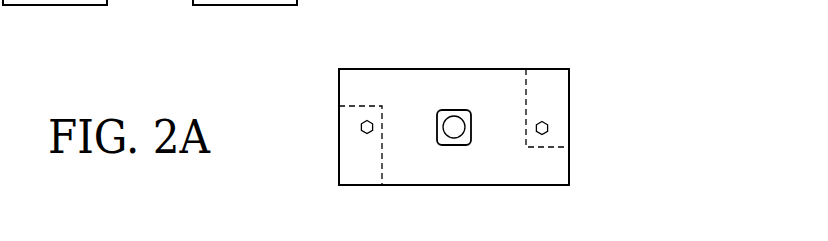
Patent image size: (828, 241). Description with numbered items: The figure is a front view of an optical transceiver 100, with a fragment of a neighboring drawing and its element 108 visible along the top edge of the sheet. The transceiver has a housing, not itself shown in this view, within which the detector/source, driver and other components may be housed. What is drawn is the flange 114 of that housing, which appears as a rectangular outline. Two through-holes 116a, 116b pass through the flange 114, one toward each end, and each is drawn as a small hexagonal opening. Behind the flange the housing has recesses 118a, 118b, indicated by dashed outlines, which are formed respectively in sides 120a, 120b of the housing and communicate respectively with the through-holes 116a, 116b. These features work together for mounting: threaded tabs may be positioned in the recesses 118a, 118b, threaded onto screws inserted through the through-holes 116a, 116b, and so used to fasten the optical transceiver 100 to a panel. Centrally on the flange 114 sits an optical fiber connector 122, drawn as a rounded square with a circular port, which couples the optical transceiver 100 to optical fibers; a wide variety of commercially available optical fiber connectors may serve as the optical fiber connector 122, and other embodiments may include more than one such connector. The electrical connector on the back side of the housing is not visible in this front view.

The optical transceiver 100 is at (552, 31).
The component of preceding figure 108 is at (149, 9).
The flange 114 is at (515, 185).
The through-hole 116a is at (548, 128).
The through-hole 116b is at (361, 127).
The recess 118a is at (558, 97).
The recess 118b is at (348, 165).
The side 120a is at (569, 173).
The side 120b is at (339, 86).
The optical fiber connector 122 is at (454, 110).